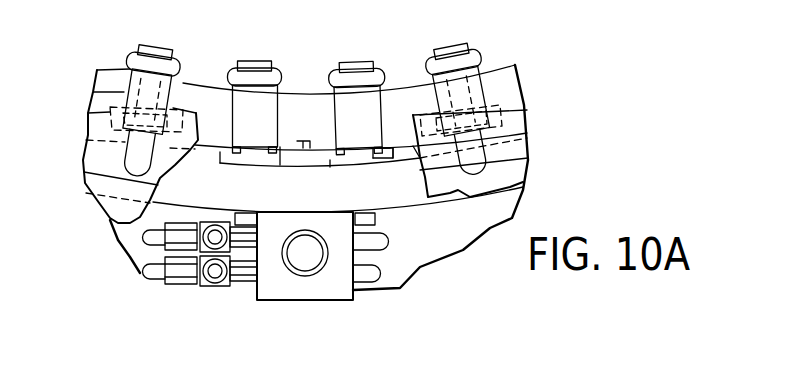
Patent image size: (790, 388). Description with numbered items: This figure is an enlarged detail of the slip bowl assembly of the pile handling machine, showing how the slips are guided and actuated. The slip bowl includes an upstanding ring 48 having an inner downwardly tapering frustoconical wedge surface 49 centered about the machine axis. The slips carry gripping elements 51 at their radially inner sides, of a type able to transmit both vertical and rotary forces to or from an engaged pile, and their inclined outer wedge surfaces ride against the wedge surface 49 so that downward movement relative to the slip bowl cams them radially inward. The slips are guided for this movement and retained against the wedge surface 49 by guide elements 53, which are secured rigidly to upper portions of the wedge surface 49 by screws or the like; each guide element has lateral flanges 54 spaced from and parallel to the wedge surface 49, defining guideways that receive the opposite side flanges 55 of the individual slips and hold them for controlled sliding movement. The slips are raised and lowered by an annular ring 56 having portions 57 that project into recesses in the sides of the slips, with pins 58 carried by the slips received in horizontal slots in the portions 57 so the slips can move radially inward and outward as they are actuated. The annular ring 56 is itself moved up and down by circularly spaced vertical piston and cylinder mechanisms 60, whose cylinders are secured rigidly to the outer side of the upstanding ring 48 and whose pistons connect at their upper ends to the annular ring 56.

The upstanding ring 48 is at (403, 202).
The frustoconical wedge surface 49 is at (300, 162).
The gripping elements 51 is at (254, 62).
The guide elements 53 is at (320, 150).
The lateral flanges 54 is at (338, 155).
The side flanges 55 is at (387, 150).
The annular ring 56 is at (110, 210).
The portions 57 is at (173, 110).
The pins 58 is at (110, 120).
The piston and cylinder mechanisms 60 is at (267, 293).